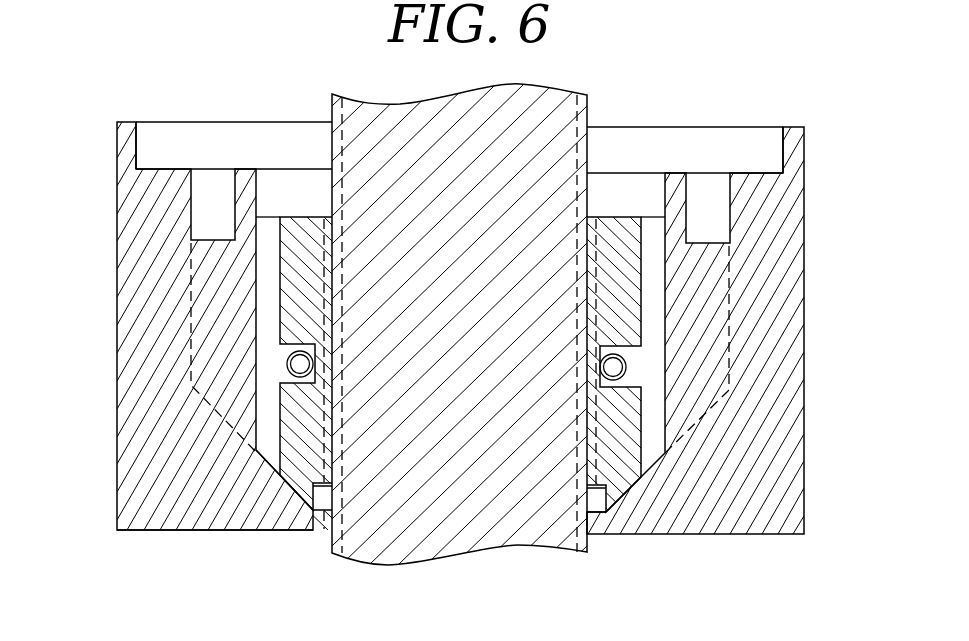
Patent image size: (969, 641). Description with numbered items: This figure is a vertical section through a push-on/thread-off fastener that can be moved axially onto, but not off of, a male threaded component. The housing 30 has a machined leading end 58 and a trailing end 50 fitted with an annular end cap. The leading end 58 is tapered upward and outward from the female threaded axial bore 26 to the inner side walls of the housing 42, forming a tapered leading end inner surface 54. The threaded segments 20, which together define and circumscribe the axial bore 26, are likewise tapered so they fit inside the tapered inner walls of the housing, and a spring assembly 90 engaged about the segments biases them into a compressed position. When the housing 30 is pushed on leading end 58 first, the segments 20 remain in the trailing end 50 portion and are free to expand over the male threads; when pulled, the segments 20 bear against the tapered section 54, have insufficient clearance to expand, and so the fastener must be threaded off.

The threaded segments 20 is at (610, 283).
The female threaded axial bore 26 is at (356, 345).
The housing 30 is at (96, 295).
The inner side walls of the housing 42 is at (665, 312).
The trailing end 50 is at (811, 107).
The tapered leading end inner surface 54 is at (283, 497).
The leading end 58 is at (165, 541).
The spring assembly 90 is at (626, 370).